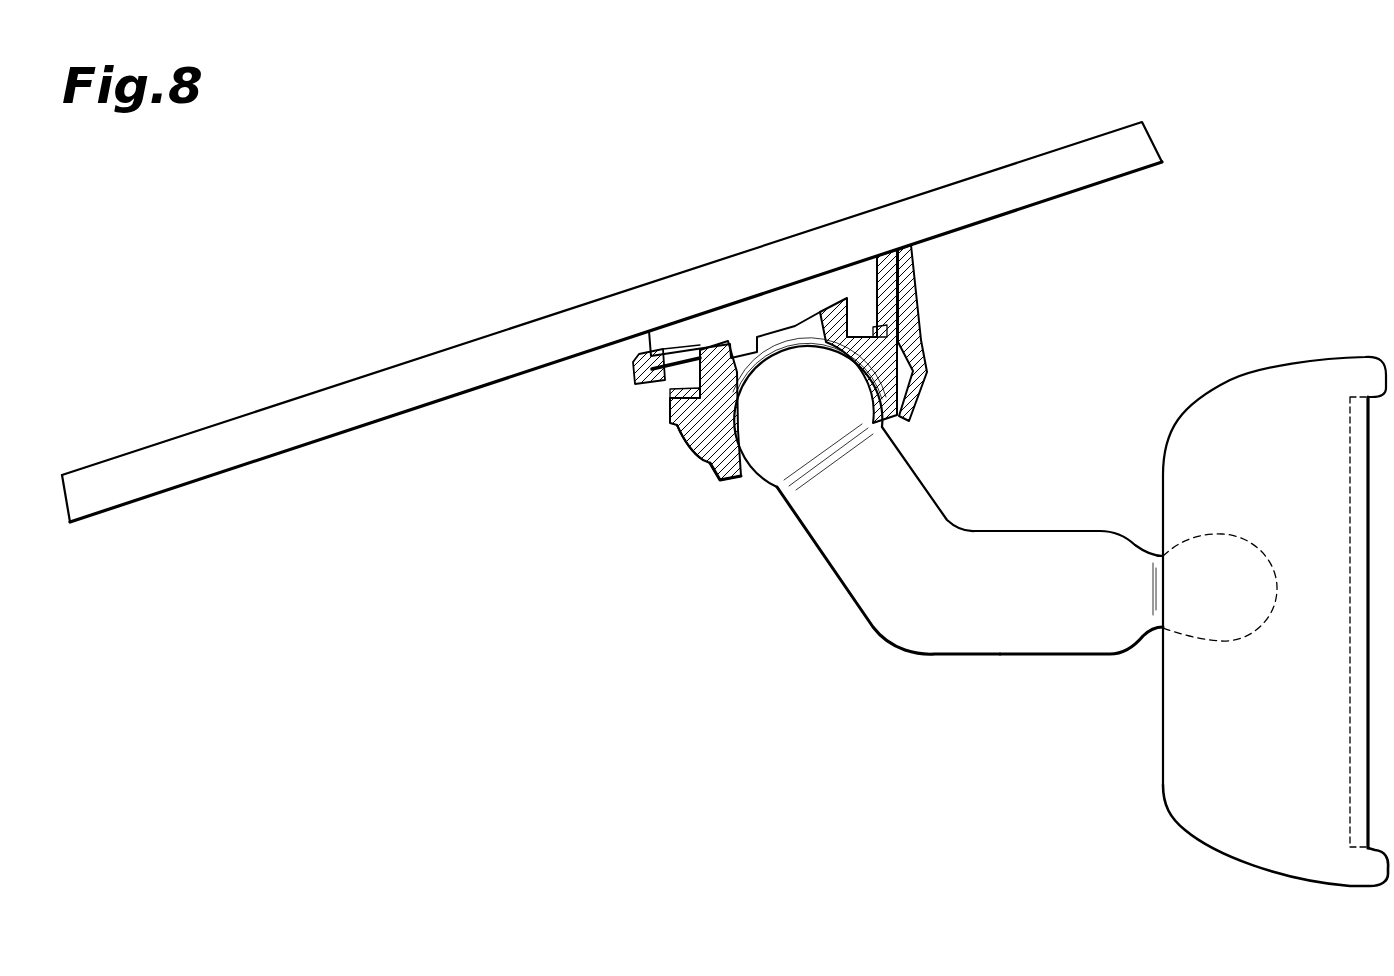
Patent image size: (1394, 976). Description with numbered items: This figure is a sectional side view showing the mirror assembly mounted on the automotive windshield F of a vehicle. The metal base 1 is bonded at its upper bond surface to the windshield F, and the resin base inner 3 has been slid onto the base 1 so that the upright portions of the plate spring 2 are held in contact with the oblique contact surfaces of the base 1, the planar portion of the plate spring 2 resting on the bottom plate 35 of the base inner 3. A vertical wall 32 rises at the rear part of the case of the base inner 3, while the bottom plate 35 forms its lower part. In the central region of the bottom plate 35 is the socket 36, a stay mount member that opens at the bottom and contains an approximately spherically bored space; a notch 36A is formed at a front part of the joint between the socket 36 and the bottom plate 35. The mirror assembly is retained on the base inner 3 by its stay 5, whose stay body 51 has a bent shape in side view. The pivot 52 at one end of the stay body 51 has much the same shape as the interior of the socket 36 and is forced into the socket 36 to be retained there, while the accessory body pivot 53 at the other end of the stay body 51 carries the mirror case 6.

The automotive windshield F is at (702, 287).
The base 1 is at (767, 308).
The plate spring 2 is at (667, 393).
The base inner 3 is at (696, 460).
The bottom plate 35 is at (677, 427).
The socket 36 is at (733, 482).
The notch 36A is at (660, 376).
The vertical wall 32 is at (912, 282).
The pivot 52 is at (840, 387).
The stay 5 is at (968, 518).
The stay body 51 is at (1040, 553).
The accessory body pivot 53 is at (1222, 640).
The mirror case 6 is at (1287, 390).